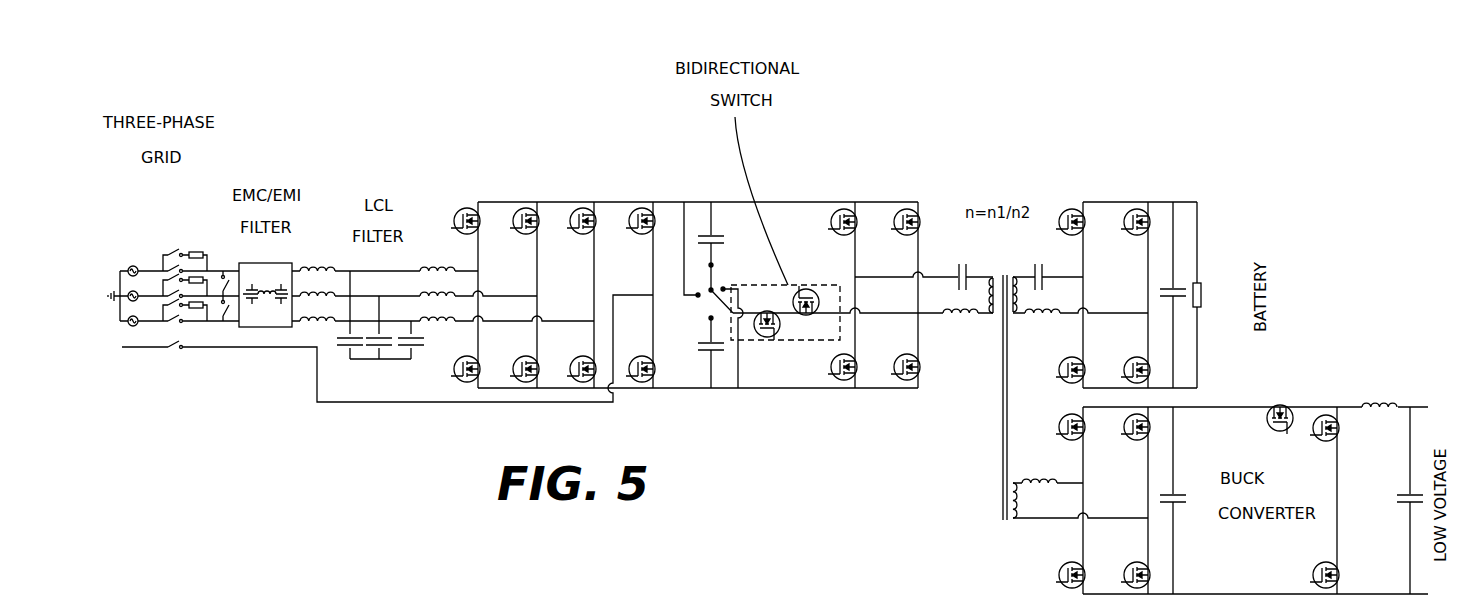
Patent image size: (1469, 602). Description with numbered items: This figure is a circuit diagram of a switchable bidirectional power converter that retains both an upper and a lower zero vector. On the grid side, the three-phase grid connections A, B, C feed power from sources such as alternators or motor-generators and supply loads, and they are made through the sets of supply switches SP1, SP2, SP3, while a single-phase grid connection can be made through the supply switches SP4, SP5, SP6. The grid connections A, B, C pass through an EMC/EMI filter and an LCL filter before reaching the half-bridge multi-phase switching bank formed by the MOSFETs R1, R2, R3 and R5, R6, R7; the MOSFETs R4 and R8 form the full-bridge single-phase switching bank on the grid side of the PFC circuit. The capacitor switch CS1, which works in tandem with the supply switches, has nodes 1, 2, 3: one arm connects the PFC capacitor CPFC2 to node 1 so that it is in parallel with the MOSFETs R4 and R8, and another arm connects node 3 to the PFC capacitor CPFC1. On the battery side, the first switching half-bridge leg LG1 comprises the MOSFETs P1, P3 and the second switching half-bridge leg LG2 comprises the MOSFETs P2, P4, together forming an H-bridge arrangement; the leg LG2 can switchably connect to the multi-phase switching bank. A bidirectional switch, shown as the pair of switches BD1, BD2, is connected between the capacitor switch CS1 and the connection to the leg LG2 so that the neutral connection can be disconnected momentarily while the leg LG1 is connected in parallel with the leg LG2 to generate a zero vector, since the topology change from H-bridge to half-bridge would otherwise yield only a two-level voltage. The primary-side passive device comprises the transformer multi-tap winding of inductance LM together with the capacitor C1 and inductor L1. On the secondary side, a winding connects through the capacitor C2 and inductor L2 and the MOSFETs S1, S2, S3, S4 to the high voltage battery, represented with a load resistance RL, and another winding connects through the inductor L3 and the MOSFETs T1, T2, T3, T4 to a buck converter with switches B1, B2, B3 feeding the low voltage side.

The grid connection A is at (129, 270).
The grid connection B is at (128, 296).
The grid connection C is at (128, 321).
The supply switch SP1 is at (170, 265).
The supply switch SP2 is at (168, 283).
The supply switch SP3 is at (170, 322).
The supply switch SP4 is at (175, 349).
The supply switch SP5 is at (225, 280).
The supply switch SP6 is at (226, 324).
The MOSFET R1 is at (465, 201).
The MOSFET R2 is at (523, 201).
The MOSFET R3 is at (580, 201).
The MOSFET R4 is at (640, 201).
The MOSFET R5 is at (459, 358).
The MOSFET R6 is at (516, 357).
The MOSFET R7 is at (574, 357).
The MOSFET R8 is at (634, 349).
The capacitor switch CS1 is at (703, 295).
The node 1 is at (692, 282).
The node 2 is at (706, 273).
The node 3 is at (727, 279).
The PFC capacitor CPFC1 is at (726, 226).
The PFC capacitor CPFC2 is at (714, 352).
The switch BD1 is at (767, 336).
The switch BD2 is at (806, 290).
The first switching half-bridge leg LG1 is at (841, 262).
The second switching half-bridge leg LG2 is at (914, 262).
The MOSFET P1 is at (842, 203).
The MOSFET P2 is at (905, 203).
The MOSFET P3 is at (842, 387).
The MOSFET P4 is at (905, 388).
The capacitor C1 is at (957, 258).
The capacitor C2 is at (1036, 258).
The inductor L1 is at (960, 329).
The inductor L2 is at (1042, 329).
The inductance of multi-tap winding LM is at (993, 316).
The MOSFET S1 is at (1070, 202).
The MOSFET S2 is at (1138, 202).
The MOSFET S3 is at (1070, 356).
The MOSFET S4 is at (1134, 356).
The load resistor RL is at (1208, 294).
The MOSFET T1 is at (1057, 423).
The MOSFET T2 is at (1124, 429).
The MOSFET T3 is at (1056, 570).
The MOSFET T4 is at (1120, 567).
The inductor L3 is at (1039, 462).
The buck converter switch B1 is at (1280, 402).
The buck converter switch B2 is at (1324, 405).
The buck converter switch B3 is at (1309, 572).